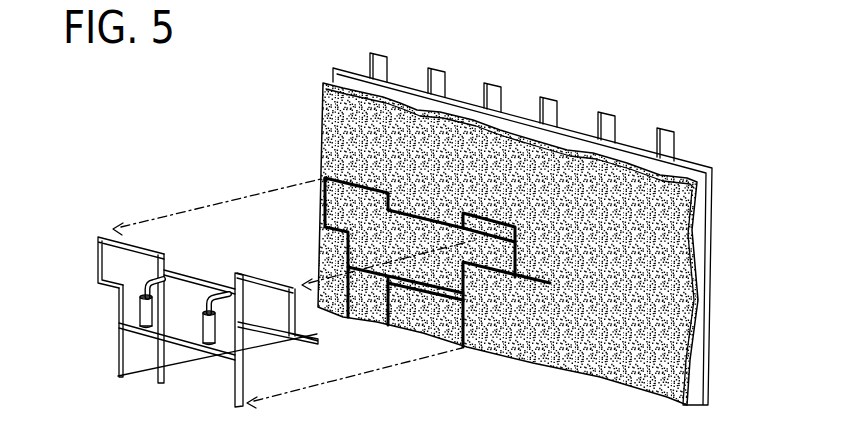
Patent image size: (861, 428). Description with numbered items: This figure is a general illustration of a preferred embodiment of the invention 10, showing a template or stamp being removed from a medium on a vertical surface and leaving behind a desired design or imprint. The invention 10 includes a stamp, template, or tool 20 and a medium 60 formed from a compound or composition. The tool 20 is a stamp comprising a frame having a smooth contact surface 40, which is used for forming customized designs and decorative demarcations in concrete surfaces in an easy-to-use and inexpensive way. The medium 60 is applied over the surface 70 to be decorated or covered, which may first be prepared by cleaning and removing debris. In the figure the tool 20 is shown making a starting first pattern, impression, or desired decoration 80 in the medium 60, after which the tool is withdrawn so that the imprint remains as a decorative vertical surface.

The invention 10 is at (188, 174).
The tool 20 is at (97, 258).
The smooth contact surface 40 is at (123, 343).
The medium 60 is at (567, 333).
The surface 70 is at (700, 250).
The desired decoration 80 is at (462, 315).